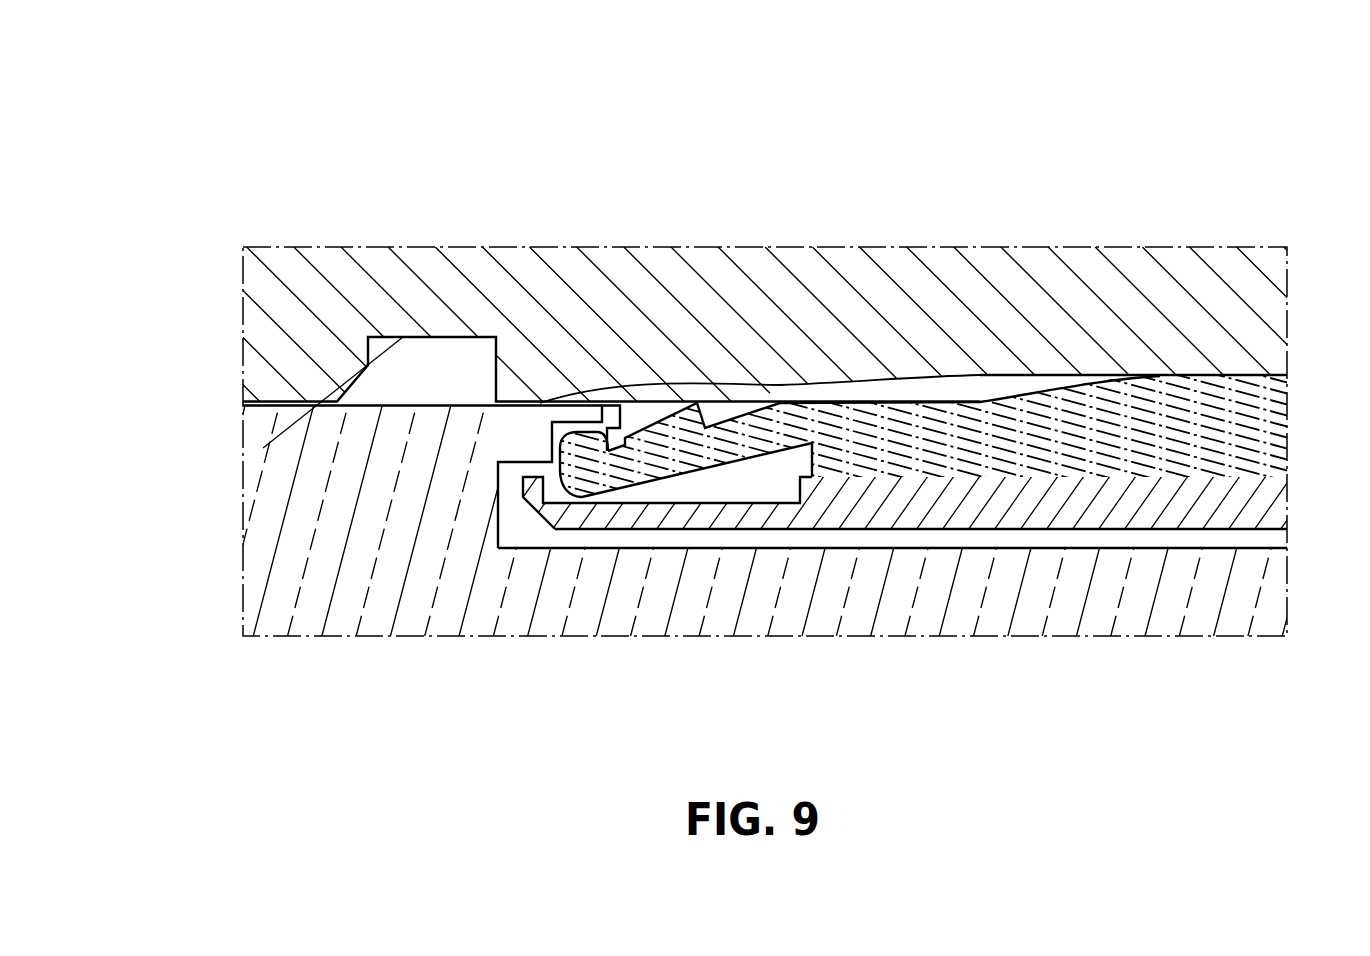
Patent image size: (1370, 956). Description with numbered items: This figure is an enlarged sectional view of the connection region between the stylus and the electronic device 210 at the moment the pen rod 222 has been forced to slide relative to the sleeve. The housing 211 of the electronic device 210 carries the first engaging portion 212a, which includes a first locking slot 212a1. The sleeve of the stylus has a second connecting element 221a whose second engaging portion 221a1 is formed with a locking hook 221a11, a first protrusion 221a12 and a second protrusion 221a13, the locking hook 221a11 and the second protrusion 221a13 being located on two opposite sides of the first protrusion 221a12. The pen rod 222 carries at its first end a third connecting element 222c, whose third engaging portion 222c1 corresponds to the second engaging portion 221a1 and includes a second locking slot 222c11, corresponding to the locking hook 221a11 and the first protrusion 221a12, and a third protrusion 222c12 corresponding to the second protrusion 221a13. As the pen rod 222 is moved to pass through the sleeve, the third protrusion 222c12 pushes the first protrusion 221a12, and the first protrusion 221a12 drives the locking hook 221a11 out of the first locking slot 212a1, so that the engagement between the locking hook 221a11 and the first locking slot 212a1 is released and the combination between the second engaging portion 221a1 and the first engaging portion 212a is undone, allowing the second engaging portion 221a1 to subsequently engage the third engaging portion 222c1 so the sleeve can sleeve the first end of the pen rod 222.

The electronic device 210 is at (777, 592).
The housing 211 is at (1237, 603).
The first engaging portion 212a is at (765, 224).
The first locking slot 212a1 is at (572, 422).
The pen rod 222 is at (930, 300).
The third connecting element 222c is at (544, 590).
The third engaging portion 222c1 is at (544, 561).
The second locking slot 222c11 is at (263, 448).
The third protrusion 222c12 is at (540, 403).
The second connecting element 221a is at (908, 465).
The second engaging portion 221a1 is at (908, 439).
The locking hook 221a11 is at (587, 447).
The first protrusion 221a12 is at (693, 433).
The second protrusion 221a13 is at (1032, 383).